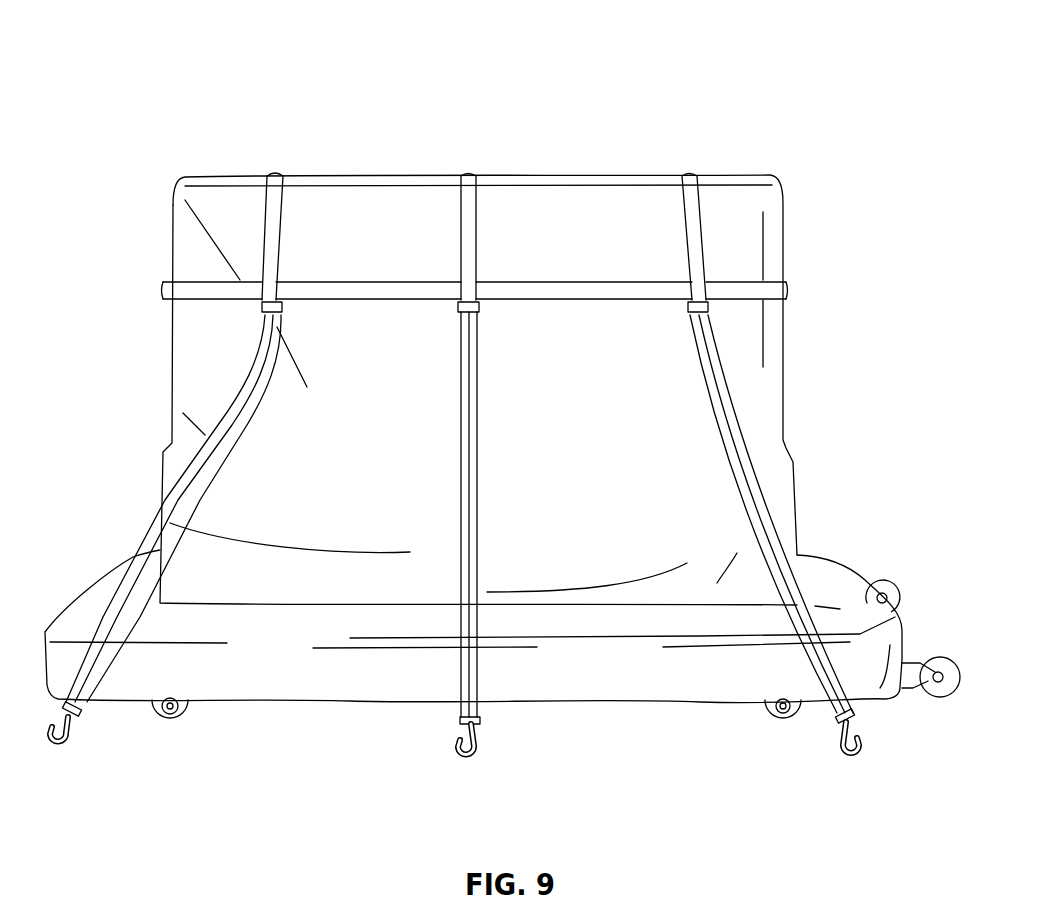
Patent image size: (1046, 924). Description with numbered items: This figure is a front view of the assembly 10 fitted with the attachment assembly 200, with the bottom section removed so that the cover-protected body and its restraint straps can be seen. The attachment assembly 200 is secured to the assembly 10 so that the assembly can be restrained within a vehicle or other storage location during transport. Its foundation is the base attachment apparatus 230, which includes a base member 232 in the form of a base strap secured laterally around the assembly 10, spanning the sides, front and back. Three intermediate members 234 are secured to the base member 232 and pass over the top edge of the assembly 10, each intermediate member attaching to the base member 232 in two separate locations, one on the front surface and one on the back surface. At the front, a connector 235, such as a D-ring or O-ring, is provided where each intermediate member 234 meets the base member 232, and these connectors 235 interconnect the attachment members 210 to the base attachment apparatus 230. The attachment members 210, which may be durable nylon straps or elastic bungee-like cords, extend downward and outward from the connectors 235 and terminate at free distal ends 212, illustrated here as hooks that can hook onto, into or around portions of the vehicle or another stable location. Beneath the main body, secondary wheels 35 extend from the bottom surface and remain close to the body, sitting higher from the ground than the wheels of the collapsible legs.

The assembly 10 is at (545, 130).
The secondary wheels 35 is at (180, 717).
The attachment assembly 200 is at (484, 423).
The attachment members 210 is at (148, 540).
The free distal end 212 is at (70, 737).
The base attachment apparatus 230 is at (540, 198).
The base member 232 is at (786, 293).
The intermediate members 234 is at (263, 210).
The connector 235 is at (283, 310).